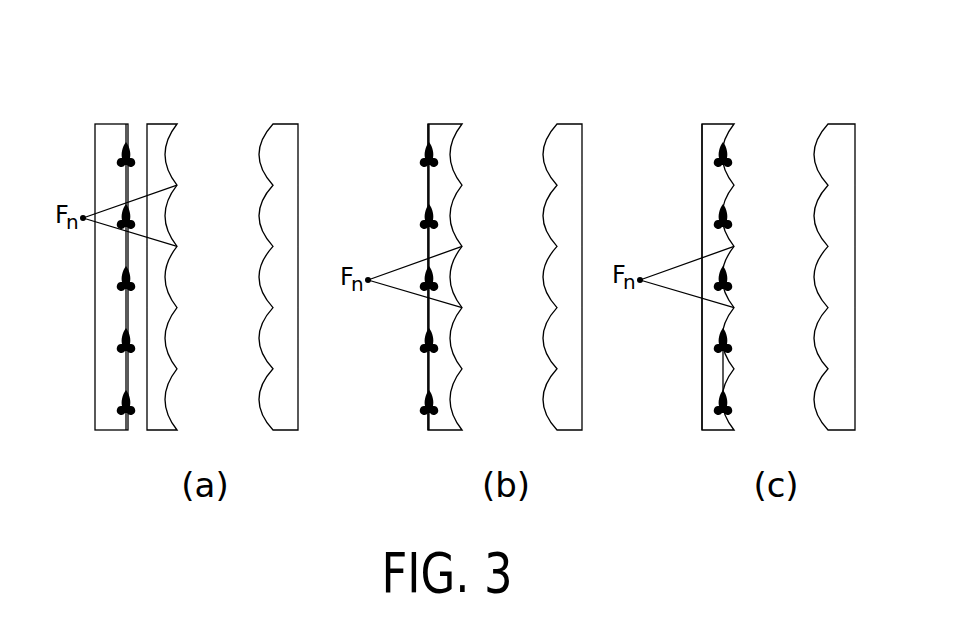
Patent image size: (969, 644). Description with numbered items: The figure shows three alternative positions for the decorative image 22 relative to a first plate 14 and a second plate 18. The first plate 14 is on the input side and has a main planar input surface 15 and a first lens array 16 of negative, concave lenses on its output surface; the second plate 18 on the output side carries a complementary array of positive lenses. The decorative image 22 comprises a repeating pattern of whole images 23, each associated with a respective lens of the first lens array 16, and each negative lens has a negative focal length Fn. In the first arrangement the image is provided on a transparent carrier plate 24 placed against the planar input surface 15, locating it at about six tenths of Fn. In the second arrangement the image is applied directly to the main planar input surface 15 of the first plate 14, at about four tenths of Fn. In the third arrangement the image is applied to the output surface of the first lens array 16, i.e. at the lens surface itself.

The first plate 14 is at (446, 126).
The main planar input surface 15 is at (428, 135).
The first lens array 16 is at (735, 181).
The second plate 18 is at (286, 126).
The decorative image 22 is at (138, 120).
The whole images 23 is at (120, 343).
The carrier plate 24 is at (114, 126).